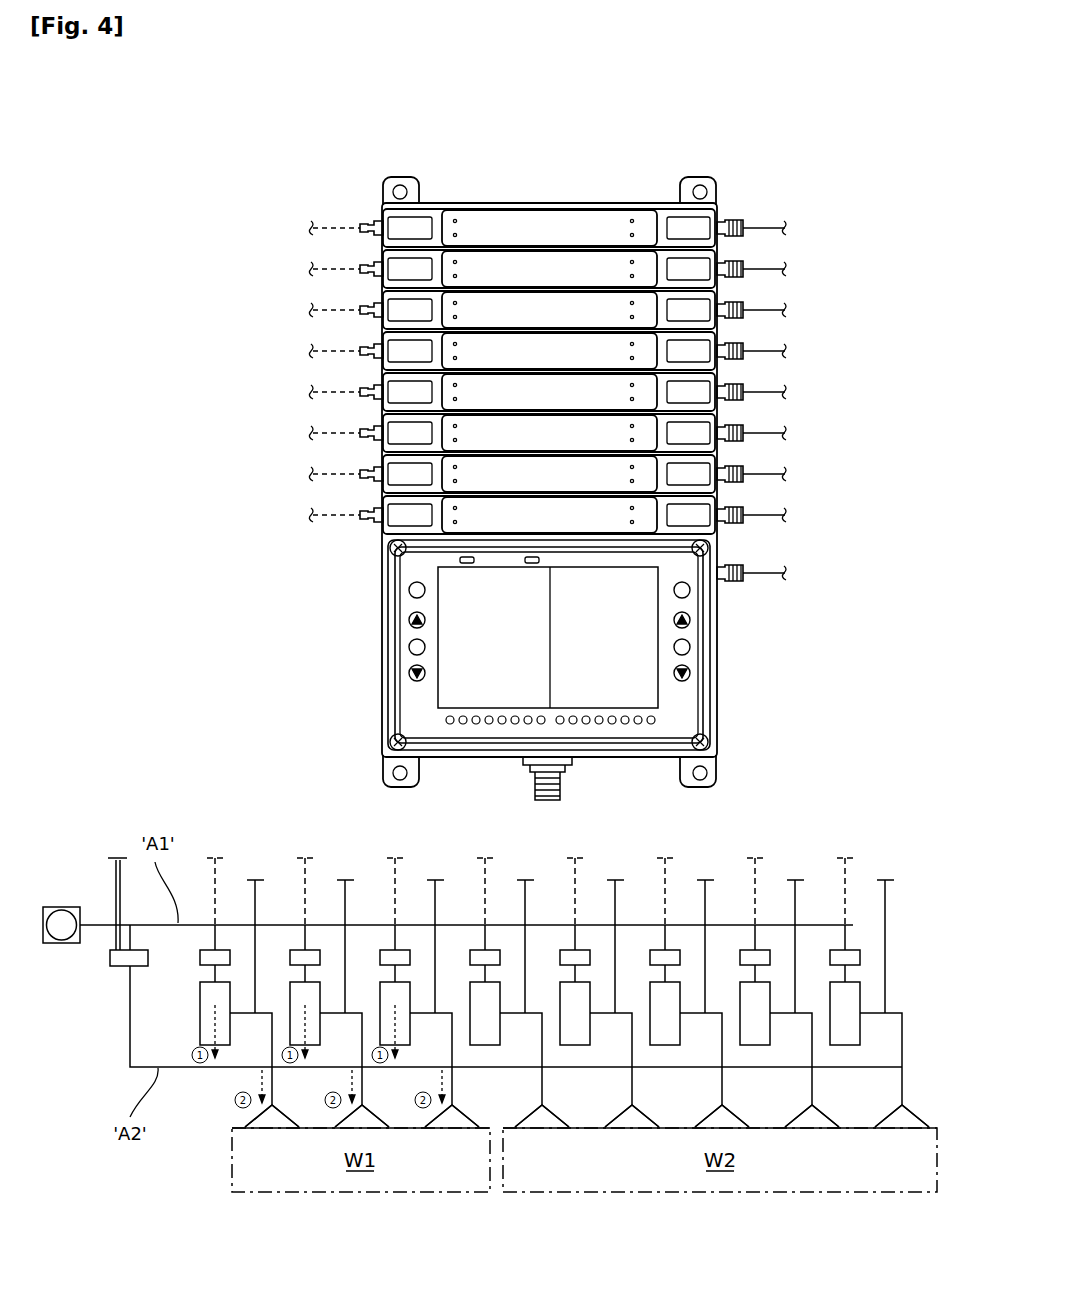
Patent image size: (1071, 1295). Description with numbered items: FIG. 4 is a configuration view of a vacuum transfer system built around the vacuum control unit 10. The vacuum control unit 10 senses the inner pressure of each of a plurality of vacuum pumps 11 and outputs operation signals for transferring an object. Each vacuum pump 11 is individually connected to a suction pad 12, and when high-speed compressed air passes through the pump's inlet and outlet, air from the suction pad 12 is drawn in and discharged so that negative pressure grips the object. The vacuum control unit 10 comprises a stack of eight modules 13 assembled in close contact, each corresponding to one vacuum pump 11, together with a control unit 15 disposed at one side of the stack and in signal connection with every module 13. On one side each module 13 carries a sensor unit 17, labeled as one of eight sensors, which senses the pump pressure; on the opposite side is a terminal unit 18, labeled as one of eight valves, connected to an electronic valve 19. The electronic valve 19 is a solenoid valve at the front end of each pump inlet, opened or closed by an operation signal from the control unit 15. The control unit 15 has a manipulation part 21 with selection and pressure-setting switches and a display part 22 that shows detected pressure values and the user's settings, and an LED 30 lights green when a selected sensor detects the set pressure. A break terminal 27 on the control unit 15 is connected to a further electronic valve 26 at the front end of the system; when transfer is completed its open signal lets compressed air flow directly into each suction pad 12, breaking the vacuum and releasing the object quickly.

The vacuum control unit 10 is at (637, 147).
The vacuum pump 11 is at (210, 1000).
The suction pad 12 is at (375, 1112).
The module 13 is at (563, 267).
The control unit 15 is at (722, 640).
The sensor unit 17 is at (364, 223).
The terminal unit 18 is at (738, 217).
The electronic valve 19 is at (232, 950).
The manipulation part 21 is at (413, 688).
The display part 22 is at (458, 681).
The electronic valve 26 is at (118, 972).
The break terminal 27 is at (741, 583).
The LED 30 is at (655, 730).